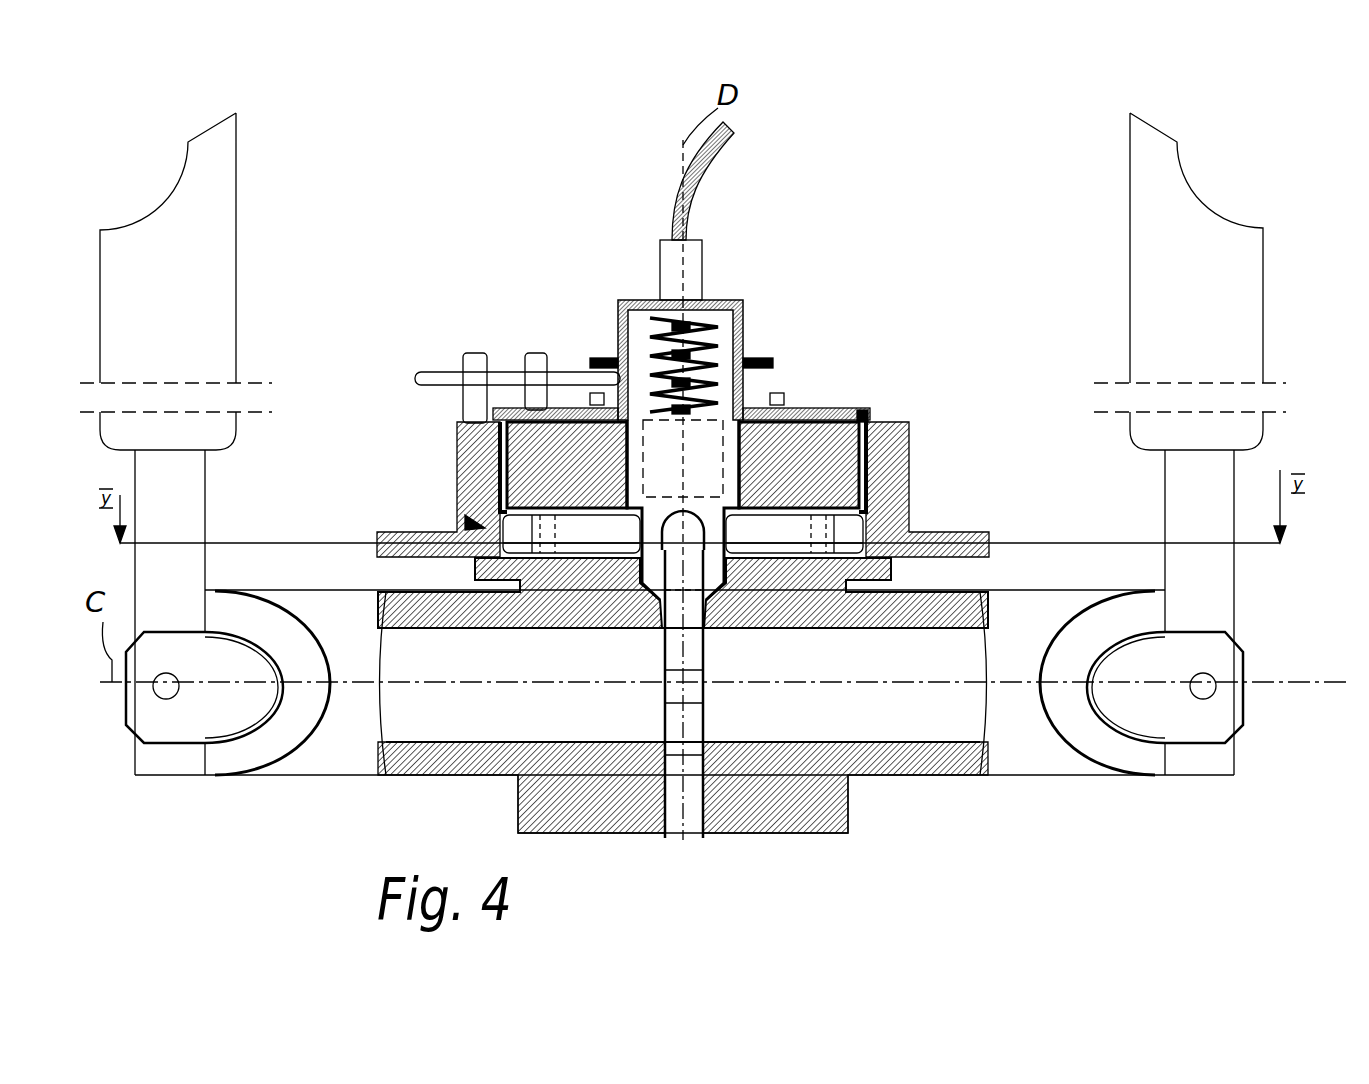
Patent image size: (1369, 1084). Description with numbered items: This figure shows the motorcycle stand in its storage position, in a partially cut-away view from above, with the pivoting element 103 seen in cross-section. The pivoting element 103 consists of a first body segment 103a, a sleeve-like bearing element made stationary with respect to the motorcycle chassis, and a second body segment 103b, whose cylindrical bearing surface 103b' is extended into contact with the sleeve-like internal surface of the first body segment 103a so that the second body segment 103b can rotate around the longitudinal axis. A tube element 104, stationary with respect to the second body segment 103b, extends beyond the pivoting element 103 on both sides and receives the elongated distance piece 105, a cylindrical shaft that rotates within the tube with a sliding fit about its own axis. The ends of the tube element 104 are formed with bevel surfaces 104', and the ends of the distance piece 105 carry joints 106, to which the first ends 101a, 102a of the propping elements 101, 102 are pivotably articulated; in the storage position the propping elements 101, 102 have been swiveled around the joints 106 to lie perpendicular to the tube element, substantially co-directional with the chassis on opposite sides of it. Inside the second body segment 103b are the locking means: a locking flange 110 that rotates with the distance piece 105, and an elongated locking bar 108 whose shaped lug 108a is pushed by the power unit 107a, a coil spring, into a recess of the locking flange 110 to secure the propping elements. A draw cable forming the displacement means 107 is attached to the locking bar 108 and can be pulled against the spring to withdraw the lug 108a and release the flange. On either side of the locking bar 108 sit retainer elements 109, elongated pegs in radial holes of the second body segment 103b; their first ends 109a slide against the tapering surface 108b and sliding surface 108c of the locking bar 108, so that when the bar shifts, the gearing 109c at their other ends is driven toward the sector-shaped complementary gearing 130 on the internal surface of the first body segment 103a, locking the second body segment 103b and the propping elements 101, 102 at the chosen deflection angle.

The propping element 101 is at (1143, 282).
The first end of propping element 101a is at (1172, 532).
The propping element 102 is at (212, 255).
The first end of propping element 102a is at (187, 540).
The pivoting element 103 is at (927, 433).
The first body segment 103a is at (912, 462).
The second body segment 103b is at (919, 341).
The cylindrical bearing surface 103b' is at (507, 364).
The tube element 104 is at (722, 750).
The bevel surface 104' is at (672, 746).
The distance piece 105 is at (940, 715).
The joint 106 is at (170, 694).
The displacement means 107 is at (676, 190).
The power unit 107a is at (705, 352).
The locking bar 108 is at (747, 398).
The shaped lug 108a is at (848, 408).
The tapering surface 108b is at (648, 578).
The sliding surface 108c is at (585, 625).
The retainer element 109 is at (455, 510).
The first end of retainer element 109a is at (577, 417).
The gearing 109c is at (518, 417).
The locking flange 110 is at (697, 840).
The complementary gearing 130 is at (455, 478).